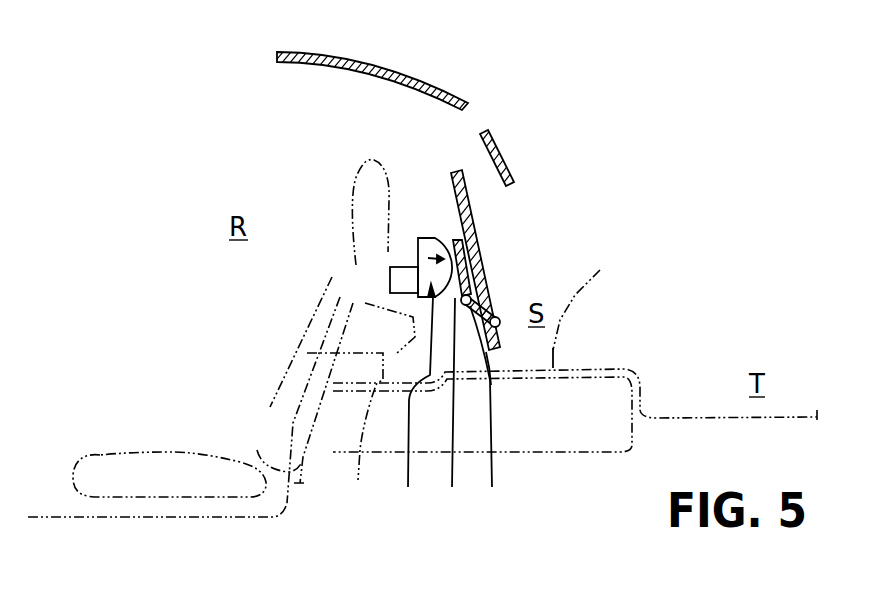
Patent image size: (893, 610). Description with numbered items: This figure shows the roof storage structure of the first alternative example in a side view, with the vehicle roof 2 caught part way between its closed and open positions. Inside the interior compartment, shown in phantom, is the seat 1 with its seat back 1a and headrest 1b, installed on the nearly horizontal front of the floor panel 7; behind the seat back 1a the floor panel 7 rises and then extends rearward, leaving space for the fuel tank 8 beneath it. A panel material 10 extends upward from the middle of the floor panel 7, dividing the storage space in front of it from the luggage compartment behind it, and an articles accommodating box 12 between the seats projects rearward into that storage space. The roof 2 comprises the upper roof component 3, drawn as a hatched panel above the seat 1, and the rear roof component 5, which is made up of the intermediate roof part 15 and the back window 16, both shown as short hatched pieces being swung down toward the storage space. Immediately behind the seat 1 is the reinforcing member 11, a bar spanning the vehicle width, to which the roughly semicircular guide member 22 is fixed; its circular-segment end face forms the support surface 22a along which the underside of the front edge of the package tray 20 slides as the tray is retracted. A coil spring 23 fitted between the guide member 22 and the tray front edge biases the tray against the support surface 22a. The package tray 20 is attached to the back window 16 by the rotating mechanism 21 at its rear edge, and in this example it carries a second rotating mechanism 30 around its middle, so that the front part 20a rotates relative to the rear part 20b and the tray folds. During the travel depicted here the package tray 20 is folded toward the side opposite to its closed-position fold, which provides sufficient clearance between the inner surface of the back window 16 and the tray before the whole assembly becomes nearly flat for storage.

The seat 1 is at (346, 192).
The seat back 1a is at (283, 373).
The headrest 1b is at (356, 198).
The roof 2 is at (499, 113).
The upper roof component 3 is at (447, 88).
The rear roof component 5 is at (613, 113).
The floor panel 7 is at (300, 483).
The fuel tank 8 is at (577, 453).
The panel material 10 is at (575, 295).
The reinforcing member 11 is at (390, 285).
The articles accommodating box 12 is at (361, 502).
The intermediate roof part 15 is at (505, 149).
The back window 16 is at (480, 214).
The package tray 20 is at (623, 187).
The front part 20a is at (487, 256).
The rear part 20b is at (499, 316).
The rotating mechanism 21 is at (553, 358).
The guide member 22 is at (482, 319).
The support surface 22a is at (455, 397).
The coil spring 23 is at (432, 238).
The rotating mechanism 30 is at (492, 412).